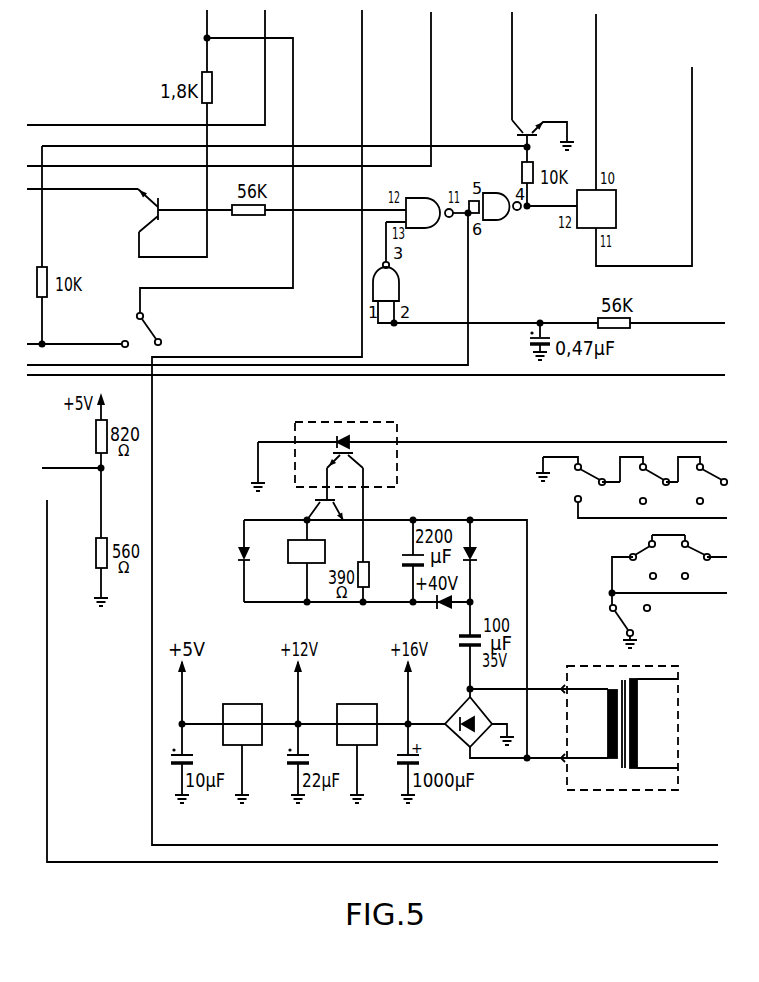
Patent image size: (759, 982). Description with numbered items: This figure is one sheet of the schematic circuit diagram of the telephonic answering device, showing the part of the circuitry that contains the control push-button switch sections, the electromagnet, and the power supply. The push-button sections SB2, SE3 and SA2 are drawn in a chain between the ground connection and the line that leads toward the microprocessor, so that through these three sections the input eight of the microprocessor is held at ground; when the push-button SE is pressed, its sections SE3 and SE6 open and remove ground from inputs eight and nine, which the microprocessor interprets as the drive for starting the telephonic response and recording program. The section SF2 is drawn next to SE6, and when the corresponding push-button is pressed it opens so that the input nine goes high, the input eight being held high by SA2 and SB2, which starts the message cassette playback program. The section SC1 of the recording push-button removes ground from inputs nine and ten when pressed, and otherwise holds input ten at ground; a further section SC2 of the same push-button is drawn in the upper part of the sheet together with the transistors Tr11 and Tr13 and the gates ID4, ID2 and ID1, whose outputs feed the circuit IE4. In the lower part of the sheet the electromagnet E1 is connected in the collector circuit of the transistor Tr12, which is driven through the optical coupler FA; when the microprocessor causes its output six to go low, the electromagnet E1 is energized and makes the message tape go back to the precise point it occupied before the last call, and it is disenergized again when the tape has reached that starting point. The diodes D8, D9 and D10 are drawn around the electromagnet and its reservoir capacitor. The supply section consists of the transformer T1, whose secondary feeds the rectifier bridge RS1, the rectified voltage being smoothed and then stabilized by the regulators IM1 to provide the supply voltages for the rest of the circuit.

The transistor Tr11 is at (137, 210).
The transistor Tr12 is at (326, 520).
The transistor Tr13 is at (539, 119).
The NAND gate ID1 is at (386, 281).
The NAND gate ID2 is at (495, 206).
The NAND gate ID4 is at (437, 213).
The integrated circuit IE4 is at (596, 209).
The switch SC2 is at (135, 330).
The recording push-button section SC1 is at (639, 620).
The push-button section SB2 is at (635, 487).
The push-button section SE3 is at (649, 480).
The push-button section SA2 is at (702, 480).
The push-button section SE6 is at (669, 568).
The playback push-button section SF2 is at (705, 555).
The optocoupler F.A. FA is at (346, 442).
The electromagnet E1 is at (306, 551).
The diode D8 is at (231, 555).
The diode D9 is at (484, 554).
The diode D10 is at (441, 615).
The rectifier bridge RS1 is at (477, 718).
The voltage regulator IM1 is at (300, 724).
The transformer T1 is at (619, 728).